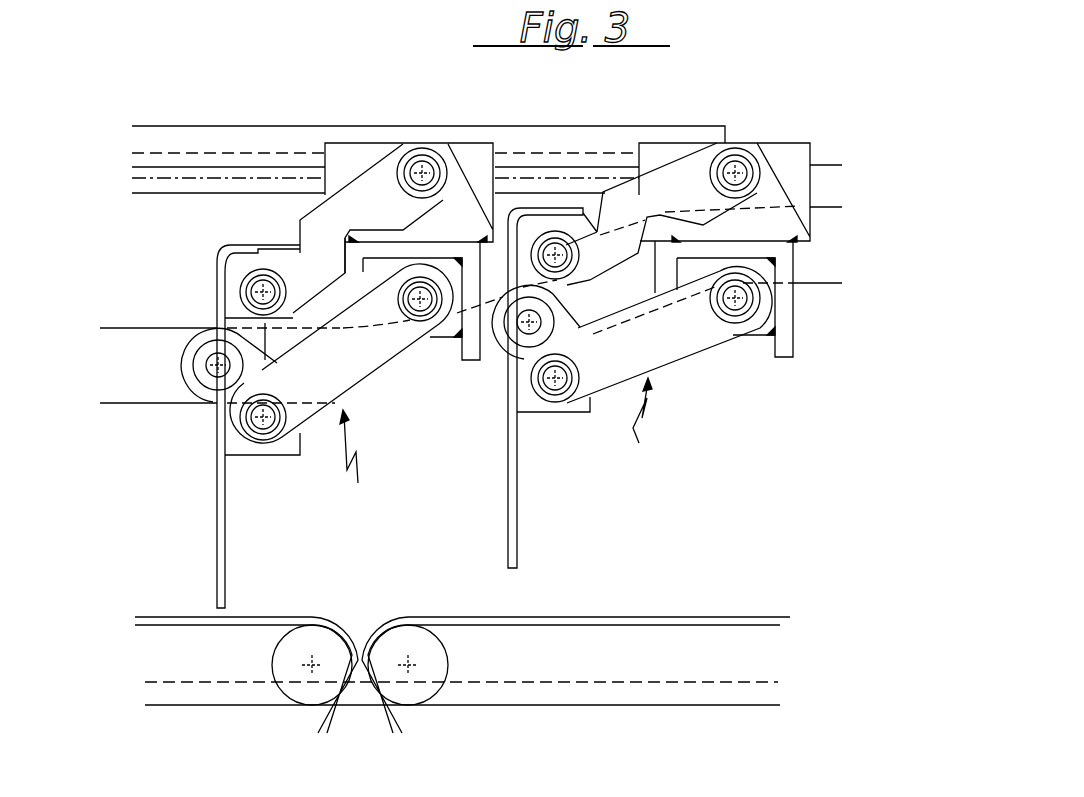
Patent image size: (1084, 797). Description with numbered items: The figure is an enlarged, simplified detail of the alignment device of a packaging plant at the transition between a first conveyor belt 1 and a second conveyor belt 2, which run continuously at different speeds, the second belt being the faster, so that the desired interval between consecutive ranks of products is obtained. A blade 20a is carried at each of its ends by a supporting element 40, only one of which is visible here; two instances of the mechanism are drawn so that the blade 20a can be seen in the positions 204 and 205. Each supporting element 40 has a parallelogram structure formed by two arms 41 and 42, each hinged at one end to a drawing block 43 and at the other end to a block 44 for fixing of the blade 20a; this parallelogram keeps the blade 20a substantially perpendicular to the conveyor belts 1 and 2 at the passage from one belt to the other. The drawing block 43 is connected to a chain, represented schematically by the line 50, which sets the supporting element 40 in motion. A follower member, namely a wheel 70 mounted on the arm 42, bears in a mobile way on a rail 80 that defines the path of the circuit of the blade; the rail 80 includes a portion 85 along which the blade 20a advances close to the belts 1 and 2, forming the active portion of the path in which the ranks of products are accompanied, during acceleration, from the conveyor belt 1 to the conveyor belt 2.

The first conveyor belt 1 is at (158, 617).
The second conveyor belt 2 is at (690, 617).
The blade 20a is at (215, 548).
The supporting element 40 is at (217, 243).
The arm 41 is at (368, 178).
The arm 42 is at (367, 364).
The drawing block 43 is at (467, 147).
The block for fixing of the blade 44 is at (262, 252).
The chain 50 is at (166, 167).
The wheel 70 is at (203, 342).
The rail 80 is at (131, 392).
The portion of rail 85 is at (151, 320).
The position 204 is at (343, 460).
The position 205 is at (660, 423).